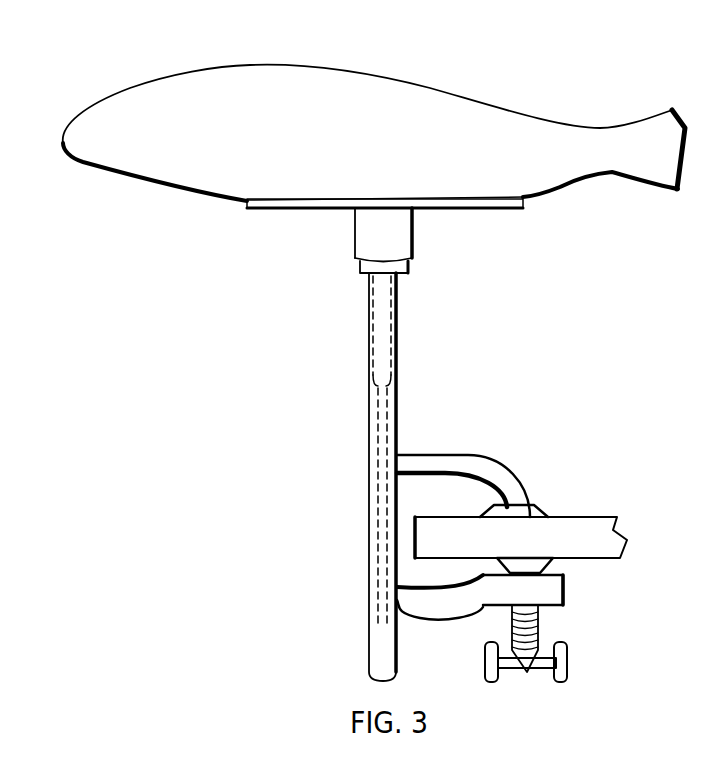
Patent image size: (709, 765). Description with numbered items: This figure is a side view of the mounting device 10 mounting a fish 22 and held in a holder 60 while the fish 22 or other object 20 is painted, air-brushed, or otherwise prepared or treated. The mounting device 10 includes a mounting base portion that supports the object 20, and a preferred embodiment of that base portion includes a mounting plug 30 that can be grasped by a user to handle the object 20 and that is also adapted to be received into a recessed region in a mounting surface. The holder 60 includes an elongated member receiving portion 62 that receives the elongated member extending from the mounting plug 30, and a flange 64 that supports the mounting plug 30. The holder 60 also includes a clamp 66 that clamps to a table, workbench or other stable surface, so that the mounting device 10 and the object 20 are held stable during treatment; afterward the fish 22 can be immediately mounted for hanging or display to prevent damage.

The mounting device 10 is at (269, 308).
The object 20 is at (414, 73).
The fish 22 is at (260, 65).
The mounting plug 30 is at (406, 230).
The holder 60 is at (410, 397).
The elongated member receiving portion 62 is at (398, 326).
The flange 64 is at (363, 272).
The clamp 66 is at (497, 465).